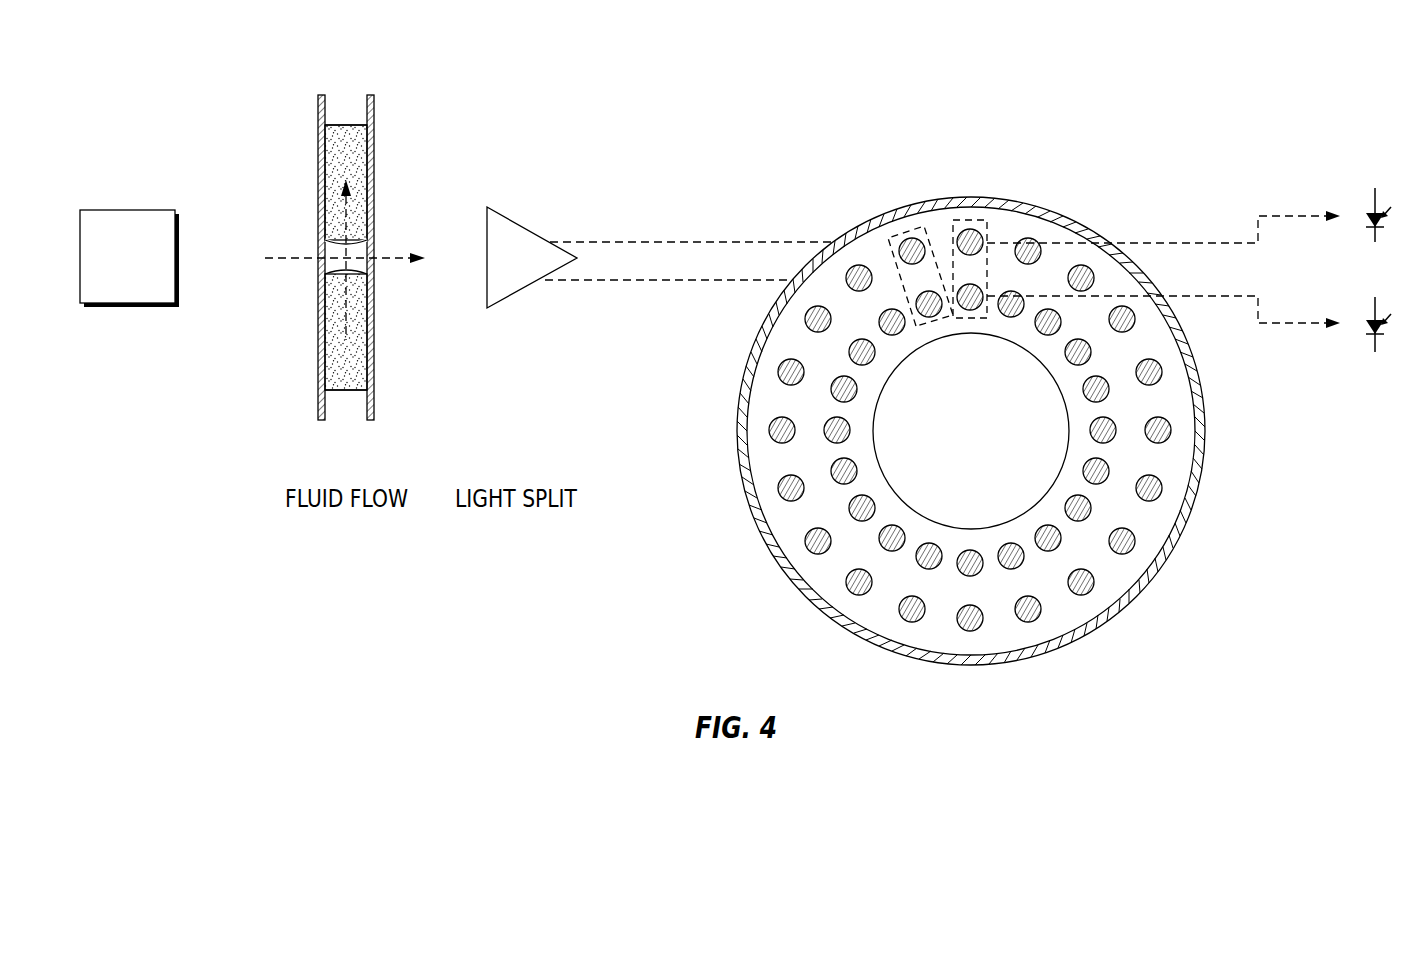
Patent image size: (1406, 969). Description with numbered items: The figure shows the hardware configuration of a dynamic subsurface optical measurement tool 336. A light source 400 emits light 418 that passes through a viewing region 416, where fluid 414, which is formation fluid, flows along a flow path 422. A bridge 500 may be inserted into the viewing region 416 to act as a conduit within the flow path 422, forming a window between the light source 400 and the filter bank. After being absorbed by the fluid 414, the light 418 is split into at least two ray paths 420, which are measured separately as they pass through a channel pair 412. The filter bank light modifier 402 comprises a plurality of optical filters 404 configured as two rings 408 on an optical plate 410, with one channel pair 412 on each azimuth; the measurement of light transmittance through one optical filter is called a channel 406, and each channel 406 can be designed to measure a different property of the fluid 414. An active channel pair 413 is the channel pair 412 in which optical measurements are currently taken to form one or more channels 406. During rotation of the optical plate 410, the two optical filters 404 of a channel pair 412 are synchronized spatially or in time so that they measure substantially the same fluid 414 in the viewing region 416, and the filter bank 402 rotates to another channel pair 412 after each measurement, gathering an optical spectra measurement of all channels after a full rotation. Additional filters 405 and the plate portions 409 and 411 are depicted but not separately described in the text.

The light source 400 is at (129, 258).
The flow path 422 is at (395, 256).
The bridge 500 is at (353, 272).
The fluid 414 is at (347, 310).
The viewing region 416 is at (373, 402).
The light 418 is at (532, 230).
The ray paths 420 is at (650, 280).
The dynamic subsurface optical measurement tool 336 is at (1151, 117).
The filter bank light modifier 402 is at (1084, 205).
The optical filters 404 is at (957, 240).
The optical filter 405 is at (930, 316).
The channel 406 is at (1210, 242).
The rings 408 is at (874, 611).
The outer rim 409 is at (835, 600).
The optical plate 410 is at (1077, 617).
The filter wheel body 411 is at (1103, 560).
The channel pair 412 is at (902, 231).
The active channel pair 413 is at (977, 222).